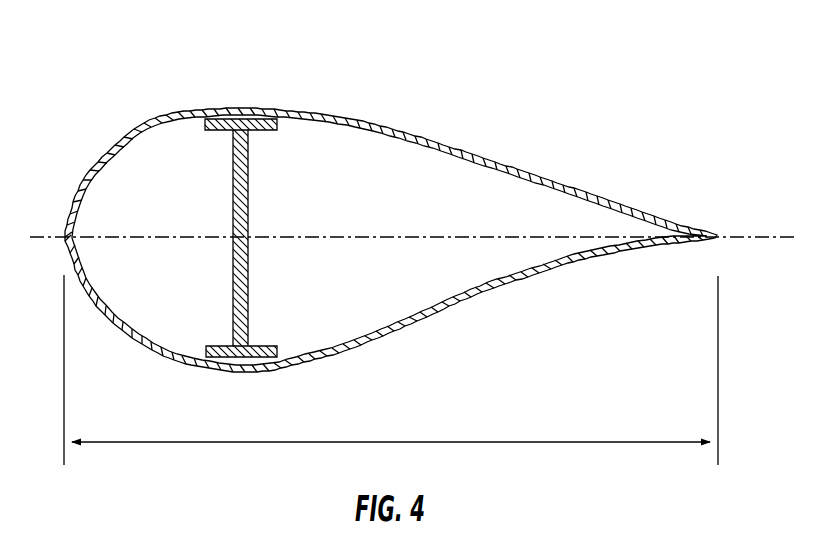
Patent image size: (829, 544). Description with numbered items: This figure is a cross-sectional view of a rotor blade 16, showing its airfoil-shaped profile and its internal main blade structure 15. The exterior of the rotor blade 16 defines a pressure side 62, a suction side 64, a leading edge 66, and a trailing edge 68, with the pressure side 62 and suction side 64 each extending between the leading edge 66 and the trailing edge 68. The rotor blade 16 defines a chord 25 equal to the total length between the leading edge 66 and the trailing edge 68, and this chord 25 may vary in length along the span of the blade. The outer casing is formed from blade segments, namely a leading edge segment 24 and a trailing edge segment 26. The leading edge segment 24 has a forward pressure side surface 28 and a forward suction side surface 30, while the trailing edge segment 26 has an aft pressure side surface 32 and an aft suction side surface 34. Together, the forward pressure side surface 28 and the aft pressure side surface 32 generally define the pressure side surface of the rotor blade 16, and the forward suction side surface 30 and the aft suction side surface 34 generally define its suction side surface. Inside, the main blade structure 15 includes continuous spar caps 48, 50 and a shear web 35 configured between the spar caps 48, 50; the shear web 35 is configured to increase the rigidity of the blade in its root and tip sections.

The main blade structure 15 is at (254, 238).
The rotor blade 16 is at (603, 82).
The leading edge segment 24 is at (88, 171).
The chord 25 is at (497, 443).
The trailing edge segment 26 is at (574, 180).
The forward pressure side surface 28 is at (138, 347).
The forward suction side surface 30 is at (140, 125).
The aft pressure side surface 32 is at (458, 307).
The aft suction side surface 34 is at (449, 140).
The shear web 35 is at (233, 198).
The spar cap 48 is at (271, 345).
The spar cap 50 is at (254, 131).
The pressure side 62 is at (316, 383).
The suction side 64 is at (320, 106).
The leading edge 66 is at (58, 255).
The trailing edge 68 is at (735, 242).